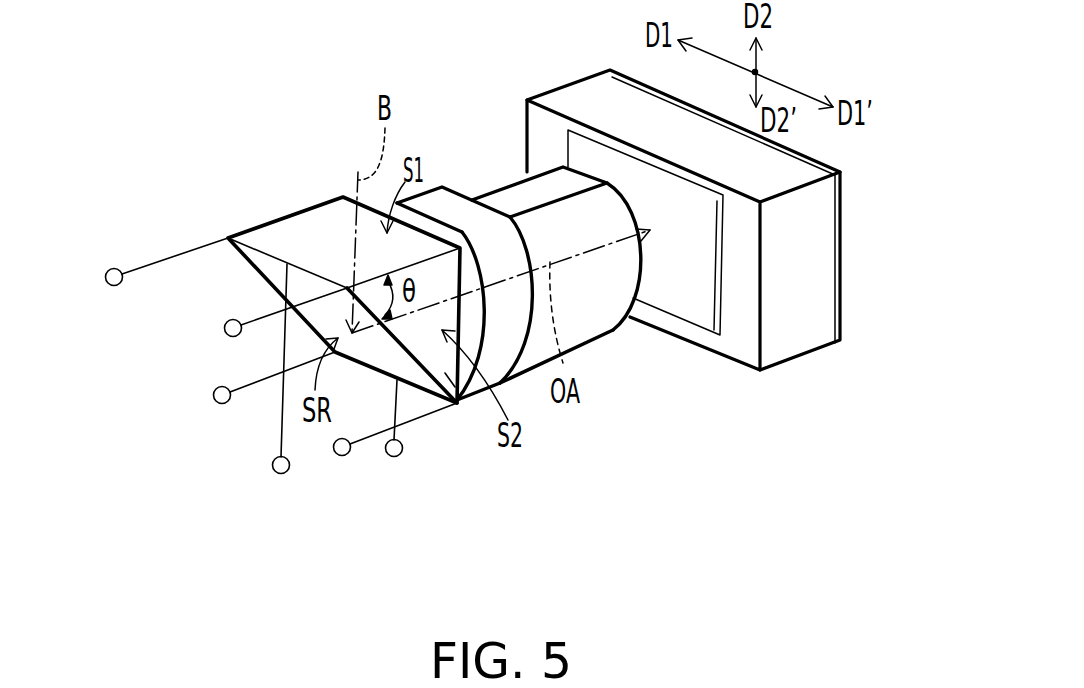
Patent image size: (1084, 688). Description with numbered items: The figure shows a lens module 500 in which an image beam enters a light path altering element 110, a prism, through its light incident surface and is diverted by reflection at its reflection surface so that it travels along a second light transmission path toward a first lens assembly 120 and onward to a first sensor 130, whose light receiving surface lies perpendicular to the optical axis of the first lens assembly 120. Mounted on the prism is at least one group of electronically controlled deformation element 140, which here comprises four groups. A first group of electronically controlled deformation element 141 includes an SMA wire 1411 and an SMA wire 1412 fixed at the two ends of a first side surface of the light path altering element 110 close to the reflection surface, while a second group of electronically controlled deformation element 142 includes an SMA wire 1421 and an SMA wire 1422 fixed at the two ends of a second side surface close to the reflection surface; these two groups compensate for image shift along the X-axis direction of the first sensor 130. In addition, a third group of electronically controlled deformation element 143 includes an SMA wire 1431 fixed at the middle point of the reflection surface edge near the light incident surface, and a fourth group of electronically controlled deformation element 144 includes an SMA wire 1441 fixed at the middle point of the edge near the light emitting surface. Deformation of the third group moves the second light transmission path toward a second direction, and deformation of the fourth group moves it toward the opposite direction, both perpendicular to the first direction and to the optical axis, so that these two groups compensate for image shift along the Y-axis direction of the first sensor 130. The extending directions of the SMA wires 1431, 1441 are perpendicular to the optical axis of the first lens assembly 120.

The light path altering element 110 is at (459, 406).
The first lens assembly 120 is at (597, 320).
The first sensor 130 is at (797, 330).
The electronically controlled deformation element 140 is at (287, 340).
The first group of electronically controlled deformation element 141 is at (211, 407).
The SMA wire 1411 is at (145, 267).
The SMA wire 1412 is at (250, 389).
The second group of electronically controlled deformation element 142 is at (330, 264).
The SMA wire 1421 is at (265, 317).
The SMA wire 1422 is at (363, 437).
The third group of electronically controlled deformation element 143 is at (321, 430).
The SMA wire 1431 is at (284, 437).
The fourth group of electronically controlled deformation element 144 is at (434, 494).
The SMA wire 1441 is at (397, 433).
The lens module 500 is at (852, 539).